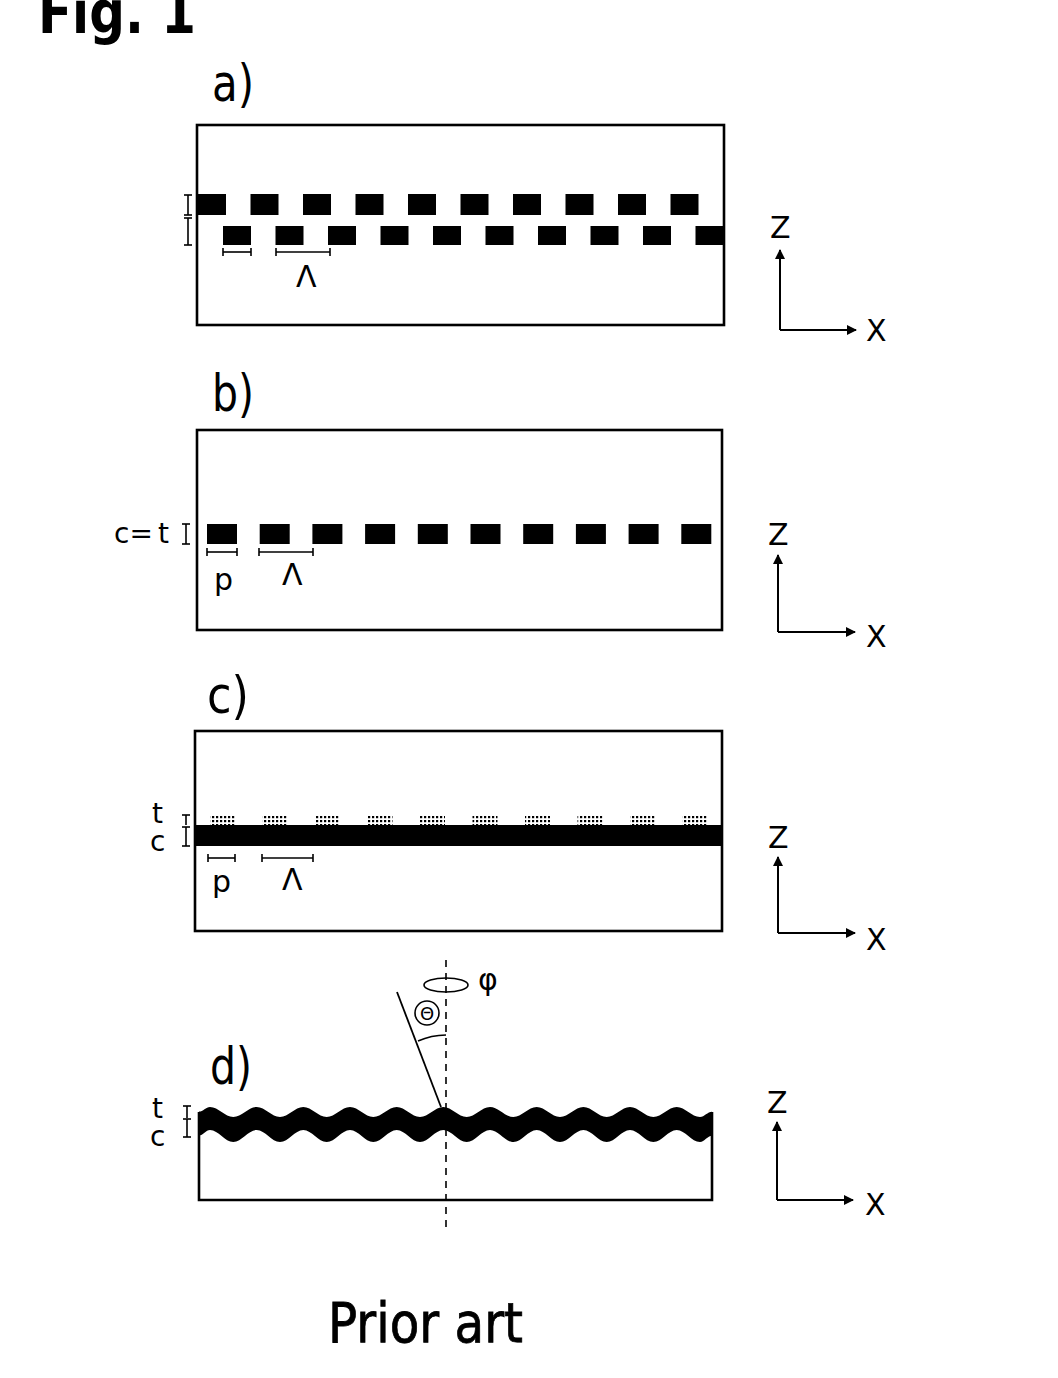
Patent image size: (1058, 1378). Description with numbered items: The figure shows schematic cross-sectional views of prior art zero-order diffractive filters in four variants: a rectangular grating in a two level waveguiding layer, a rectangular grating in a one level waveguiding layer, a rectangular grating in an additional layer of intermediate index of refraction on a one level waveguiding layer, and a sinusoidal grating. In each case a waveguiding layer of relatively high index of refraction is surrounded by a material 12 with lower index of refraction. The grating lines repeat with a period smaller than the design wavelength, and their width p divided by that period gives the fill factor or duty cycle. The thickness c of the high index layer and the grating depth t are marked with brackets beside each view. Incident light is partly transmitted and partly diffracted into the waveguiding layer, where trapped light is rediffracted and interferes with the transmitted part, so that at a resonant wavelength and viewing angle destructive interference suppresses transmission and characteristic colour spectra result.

The material with lower index of refraction 12 is at (508, 169).
The thickness of the high index of refraction layer c is at (174, 201).
The grating depth t is at (175, 233).
The grating line width p is at (237, 272).